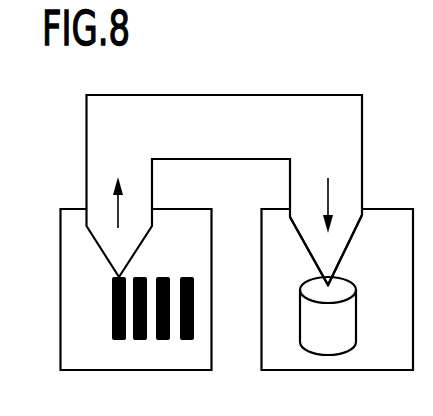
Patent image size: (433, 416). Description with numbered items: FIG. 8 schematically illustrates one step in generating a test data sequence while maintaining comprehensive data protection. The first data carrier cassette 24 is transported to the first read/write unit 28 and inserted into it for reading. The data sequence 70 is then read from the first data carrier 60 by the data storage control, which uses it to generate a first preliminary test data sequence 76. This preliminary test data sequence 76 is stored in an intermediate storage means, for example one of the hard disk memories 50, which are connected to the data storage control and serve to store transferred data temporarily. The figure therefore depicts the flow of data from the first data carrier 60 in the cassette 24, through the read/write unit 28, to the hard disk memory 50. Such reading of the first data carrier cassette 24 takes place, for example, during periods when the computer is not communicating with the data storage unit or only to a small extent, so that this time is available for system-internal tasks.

The data sequence 70 is at (98, 212).
The first read/write unit 28 is at (223, 222).
The first data carrier cassette 24 is at (98, 290).
The first data carrier 60 is at (112, 315).
The first preliminary test data sequence 76 is at (342, 235).
The hard disk memories 50 is at (345, 332).